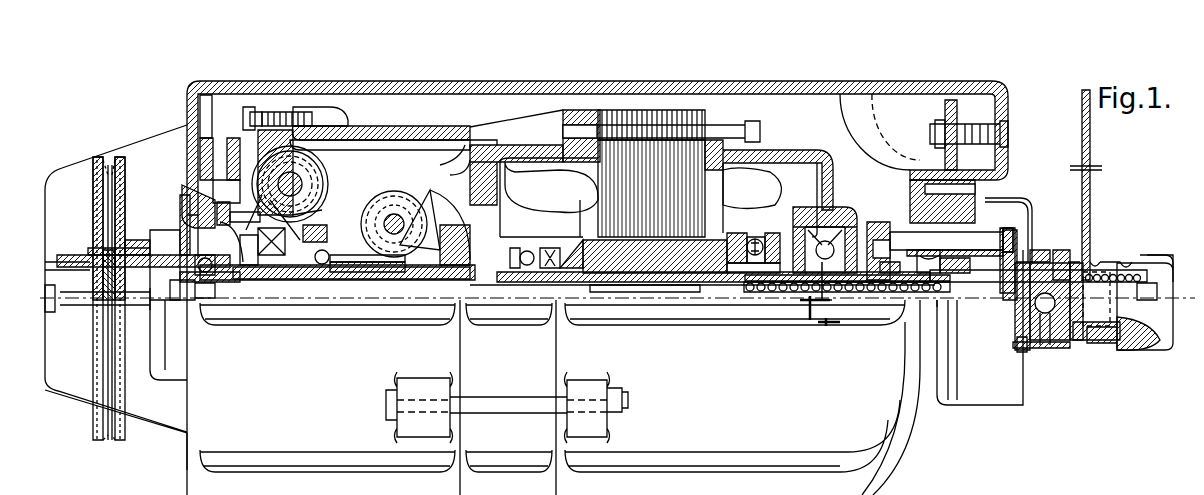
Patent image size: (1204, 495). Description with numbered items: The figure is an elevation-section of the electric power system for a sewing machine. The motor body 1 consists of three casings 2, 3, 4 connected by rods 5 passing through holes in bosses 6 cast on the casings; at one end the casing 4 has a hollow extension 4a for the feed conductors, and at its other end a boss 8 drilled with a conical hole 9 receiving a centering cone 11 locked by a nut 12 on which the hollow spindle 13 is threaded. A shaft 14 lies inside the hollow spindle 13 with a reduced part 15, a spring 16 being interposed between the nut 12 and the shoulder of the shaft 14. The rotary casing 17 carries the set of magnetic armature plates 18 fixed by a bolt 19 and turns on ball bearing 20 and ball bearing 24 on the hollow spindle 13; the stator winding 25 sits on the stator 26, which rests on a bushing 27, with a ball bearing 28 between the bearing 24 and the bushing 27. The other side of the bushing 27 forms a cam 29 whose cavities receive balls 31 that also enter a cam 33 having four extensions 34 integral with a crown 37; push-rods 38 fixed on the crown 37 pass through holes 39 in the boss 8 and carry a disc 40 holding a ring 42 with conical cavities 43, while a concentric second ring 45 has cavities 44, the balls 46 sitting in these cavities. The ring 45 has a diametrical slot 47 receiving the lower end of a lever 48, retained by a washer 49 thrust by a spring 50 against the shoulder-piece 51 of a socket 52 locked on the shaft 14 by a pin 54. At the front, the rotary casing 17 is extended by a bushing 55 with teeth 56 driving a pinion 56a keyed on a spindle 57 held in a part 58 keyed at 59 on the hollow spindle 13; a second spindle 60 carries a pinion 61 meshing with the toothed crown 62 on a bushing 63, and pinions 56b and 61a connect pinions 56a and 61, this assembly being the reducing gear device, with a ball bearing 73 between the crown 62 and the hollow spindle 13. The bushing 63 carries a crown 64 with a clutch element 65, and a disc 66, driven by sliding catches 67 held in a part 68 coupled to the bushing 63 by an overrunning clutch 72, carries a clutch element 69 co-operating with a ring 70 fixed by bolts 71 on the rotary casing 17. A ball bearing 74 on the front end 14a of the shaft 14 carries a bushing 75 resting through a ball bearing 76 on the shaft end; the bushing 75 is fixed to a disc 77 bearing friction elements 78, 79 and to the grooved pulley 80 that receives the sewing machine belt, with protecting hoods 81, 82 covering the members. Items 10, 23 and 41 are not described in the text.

The body 1 is at (798, 88).
The casing 2 is at (405, 96).
The casing 3 is at (498, 86).
The casing 4 is at (768, 86).
The hollow extension 4a is at (925, 92).
The rods 5 is at (495, 406).
The bosses 6 is at (440, 392).
The boss 8 is at (912, 180).
The conical hole 9 is at (965, 240).
The spring seat 10 is at (890, 288).
The centering cone 11 is at (938, 275).
The nut 12 is at (972, 300).
The hollow spindle 13 is at (522, 292).
The shaft 14 is at (705, 290).
The front end 14a is at (215, 300).
The reduced part 15 is at (762, 292).
The spring 16 is at (847, 292).
The rotary casing 17 is at (462, 165).
The set of magnetic armature plates 18 is at (614, 108).
The bolt 19 is at (660, 124).
The ball bearing 20 is at (812, 228).
The rotor shaft 23 is at (695, 285).
The ball bearing 24 is at (540, 245).
The stator winding 25 is at (658, 197).
The stator 26 is at (600, 168).
The bushing 27 is at (610, 292).
The ball bearing 28 is at (560, 256).
The cam 29 is at (732, 236).
The ball 31 is at (752, 239).
The cam 33 is at (776, 236).
The extensions 34 is at (806, 292).
The crown 37 is at (878, 222).
The push-rods 38 is at (1022, 198).
The holes 39 is at (930, 256).
The disc 40 is at (1012, 238).
The retaining lug 41 is at (1026, 352).
The ring 42 is at (1040, 252).
The conical cavities 43 is at (1046, 348).
The cavities 44 is at (1060, 262).
The second ring 45 is at (1076, 342).
The balls 46 is at (1038, 312).
The diametrical slot 47 is at (1088, 340).
The lever 48 is at (1082, 190).
The washer 49 is at (1094, 262).
The spring 50 is at (1120, 272).
The shoulder-piece 51 is at (1145, 283).
The socket 52 is at (1122, 350).
The pin 54 is at (1170, 258).
The bushing 55 is at (432, 265).
The teeth 56 is at (398, 280).
The pinion 56a is at (397, 218).
The pinion 56b is at (458, 164).
The spindle 57 is at (416, 205).
The part 58 is at (398, 200).
The keying 59 is at (350, 285).
The second spindle 60 is at (300, 180).
The pinion 61 is at (322, 190).
The pinion 61a is at (300, 170).
The toothed crown 62 is at (355, 205).
The bushing 63 is at (245, 282).
The crown 64 is at (222, 282).
The clutch element 65 is at (194, 195).
The disc 66 is at (232, 138).
The sliding catches 67 is at (216, 220).
The part 68 is at (283, 118).
The clutch element 69 is at (243, 140).
The ring 70 is at (320, 135).
The bolts 71 is at (300, 112).
The overrunning clutch 72 is at (285, 282).
The ball bearing 73 is at (330, 285).
The ball bearing 74 is at (185, 300).
The bushing 75 is at (142, 248).
The ball bearing 76 is at (105, 305).
The disc 77 is at (178, 222).
The friction element 78 is at (198, 110).
The friction element 79 is at (205, 148).
The grooved pulley 80 is at (98, 199).
The protecting hood 81 is at (1160, 352).
The protecting hood 82 is at (1010, 405).